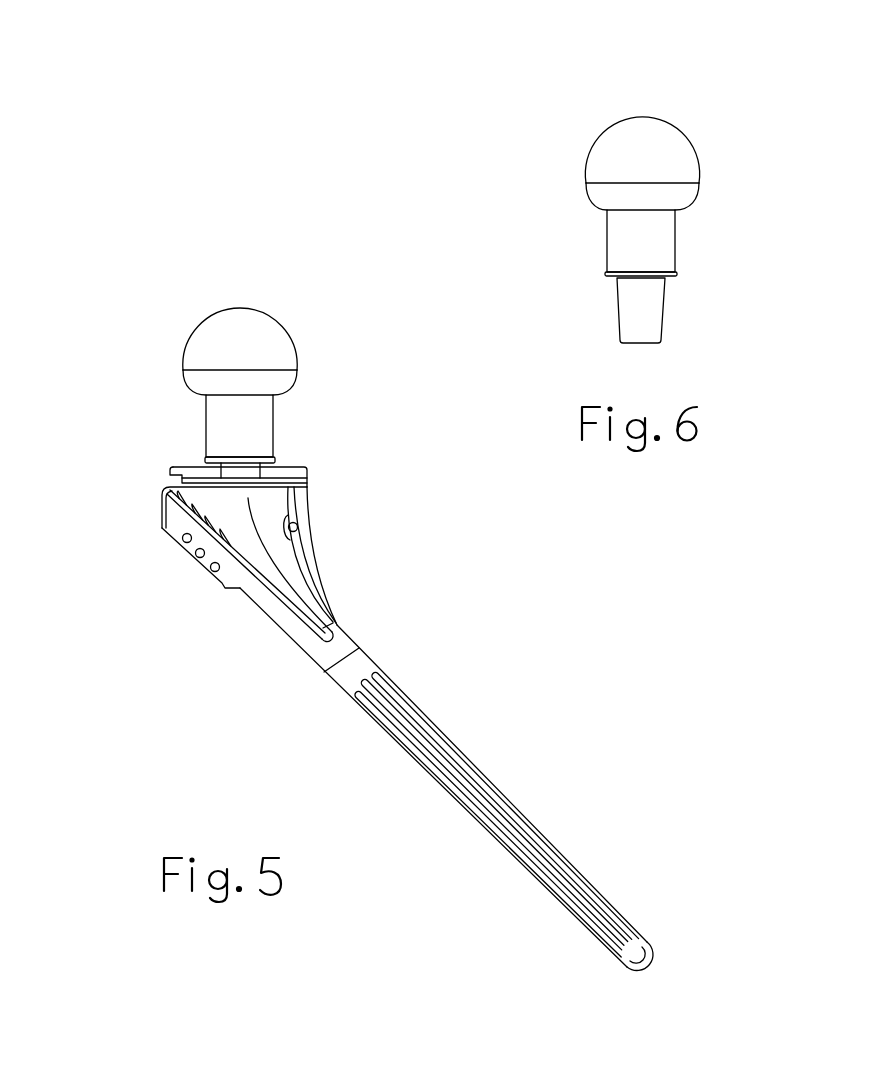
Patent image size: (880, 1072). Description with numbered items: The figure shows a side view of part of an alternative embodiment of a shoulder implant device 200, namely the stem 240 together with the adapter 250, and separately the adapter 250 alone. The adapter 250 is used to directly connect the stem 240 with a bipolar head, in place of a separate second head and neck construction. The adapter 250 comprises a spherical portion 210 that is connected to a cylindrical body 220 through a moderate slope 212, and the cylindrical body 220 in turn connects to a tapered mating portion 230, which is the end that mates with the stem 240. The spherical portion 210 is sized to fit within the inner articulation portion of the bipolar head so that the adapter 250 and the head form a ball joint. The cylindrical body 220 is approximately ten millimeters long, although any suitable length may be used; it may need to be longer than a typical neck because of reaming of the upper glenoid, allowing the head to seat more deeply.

In FIG. 5, the shoulder implant device 200 is at (160, 320).
In FIG. 6, the shoulder implant device 200 is at (613, 76).
In FIG. 5, the spherical portion 210 is at (221, 322).
In FIG. 6, the spherical portion 210 is at (603, 146).
In FIG. 5, the moderate slope 212 is at (293, 380).
In FIG. 6, the moderate slope 212 is at (682, 202).
In FIG. 6, the cylindrical body 220 is at (672, 245).
In FIG. 6, the tapered mating portion 230 is at (628, 317).
In FIG. 5, the stem 240 is at (302, 502).
In FIG. 5, the adapter 250 is at (137, 536).